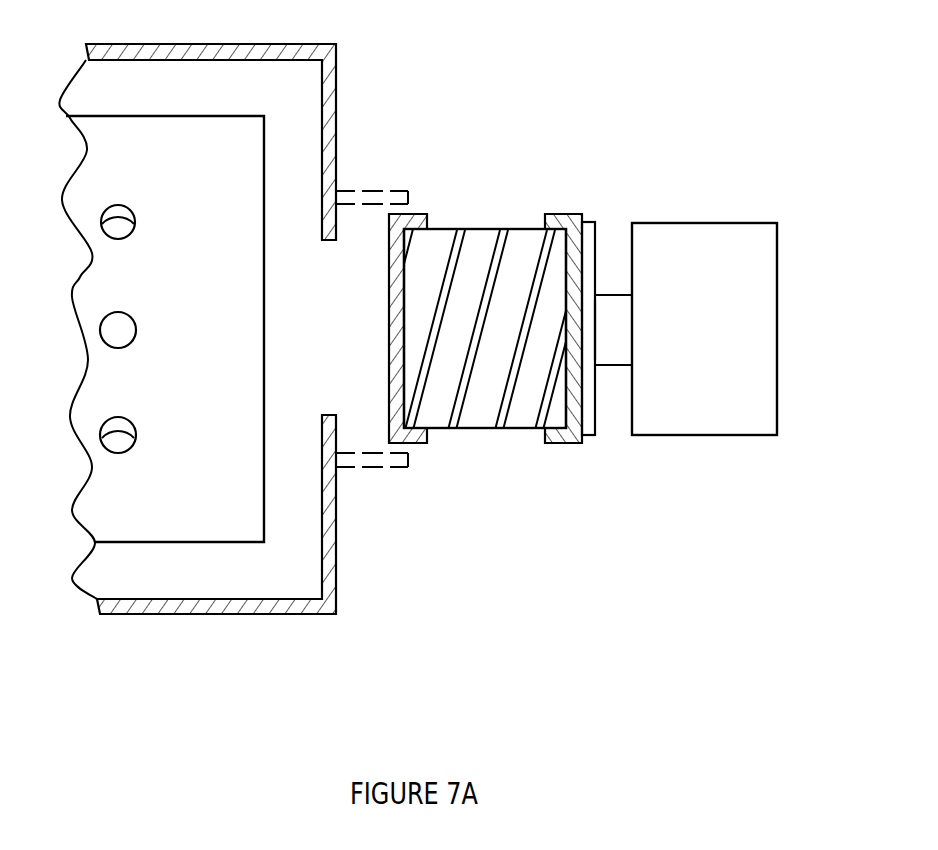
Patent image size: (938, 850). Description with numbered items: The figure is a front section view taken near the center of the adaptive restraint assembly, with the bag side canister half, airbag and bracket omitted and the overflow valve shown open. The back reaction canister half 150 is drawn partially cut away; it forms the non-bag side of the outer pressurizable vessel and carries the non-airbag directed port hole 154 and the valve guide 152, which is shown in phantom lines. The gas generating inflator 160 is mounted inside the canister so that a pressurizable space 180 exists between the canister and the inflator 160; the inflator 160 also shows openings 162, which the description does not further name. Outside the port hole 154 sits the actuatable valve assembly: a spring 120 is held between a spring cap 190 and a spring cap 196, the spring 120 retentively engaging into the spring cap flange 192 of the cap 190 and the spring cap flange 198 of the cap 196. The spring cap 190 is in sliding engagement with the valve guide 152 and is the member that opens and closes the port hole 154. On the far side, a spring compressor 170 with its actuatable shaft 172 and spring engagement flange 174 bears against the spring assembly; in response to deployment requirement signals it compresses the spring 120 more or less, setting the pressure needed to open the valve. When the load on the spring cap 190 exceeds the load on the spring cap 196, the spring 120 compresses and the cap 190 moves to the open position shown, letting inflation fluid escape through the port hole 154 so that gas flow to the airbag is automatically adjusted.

The spring 120 is at (471, 226).
The back reaction canister half 150 is at (350, 98).
The valve guide 152 is at (380, 475).
The non-airbag directed port hole 154 is at (328, 330).
The gas generating inflator 160 is at (227, 108).
The apertures 162 is at (118, 240).
The spring compressor 170 is at (717, 217).
The actuatable shaft 172 is at (605, 287).
The spring engagement flange 174 is at (600, 430).
The pressurizable space 180 is at (198, 568).
The spring cap 190 is at (321, 284).
The spring cap flange 192 is at (430, 218).
The spring cap 196 is at (585, 445).
The spring cap flange 198 is at (554, 447).